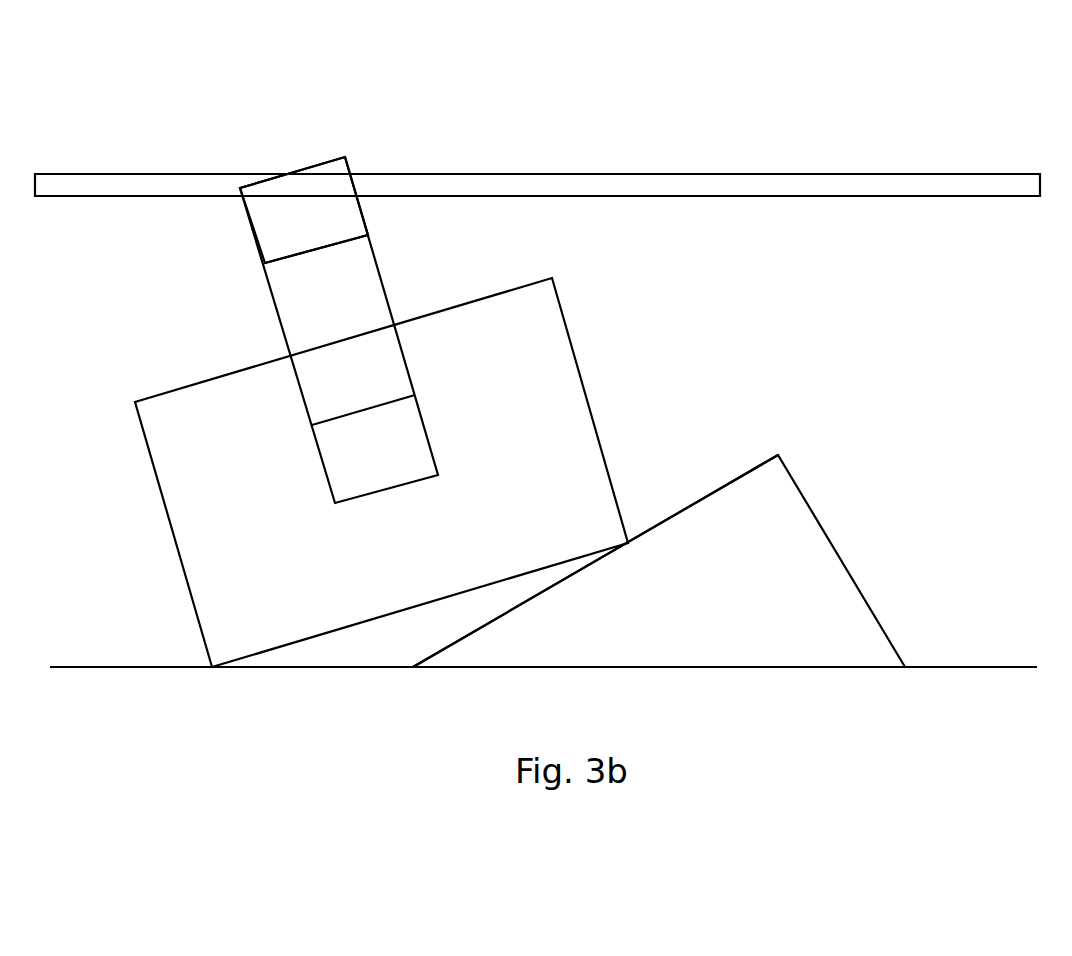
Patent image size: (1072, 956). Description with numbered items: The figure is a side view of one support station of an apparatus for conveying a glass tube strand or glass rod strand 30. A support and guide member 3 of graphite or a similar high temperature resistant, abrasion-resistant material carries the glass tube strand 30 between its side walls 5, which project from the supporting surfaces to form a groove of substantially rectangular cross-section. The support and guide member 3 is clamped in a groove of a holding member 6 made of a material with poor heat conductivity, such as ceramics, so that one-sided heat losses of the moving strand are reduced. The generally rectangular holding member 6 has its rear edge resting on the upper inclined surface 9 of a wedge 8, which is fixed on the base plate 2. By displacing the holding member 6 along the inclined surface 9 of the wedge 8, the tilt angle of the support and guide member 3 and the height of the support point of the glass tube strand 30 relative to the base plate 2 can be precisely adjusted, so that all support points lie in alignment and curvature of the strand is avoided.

The base plate 2 is at (993, 668).
The support and guide member 3 is at (360, 293).
The side wall 5 is at (320, 190).
The holding member 6 is at (543, 385).
The wedge 8 is at (822, 573).
The inclined surface 9 is at (752, 470).
The glass tube strand 30 is at (950, 172).